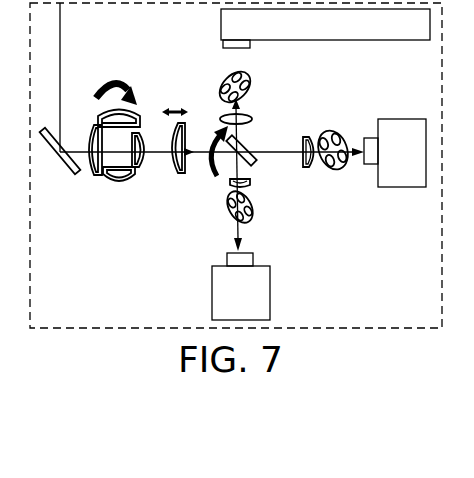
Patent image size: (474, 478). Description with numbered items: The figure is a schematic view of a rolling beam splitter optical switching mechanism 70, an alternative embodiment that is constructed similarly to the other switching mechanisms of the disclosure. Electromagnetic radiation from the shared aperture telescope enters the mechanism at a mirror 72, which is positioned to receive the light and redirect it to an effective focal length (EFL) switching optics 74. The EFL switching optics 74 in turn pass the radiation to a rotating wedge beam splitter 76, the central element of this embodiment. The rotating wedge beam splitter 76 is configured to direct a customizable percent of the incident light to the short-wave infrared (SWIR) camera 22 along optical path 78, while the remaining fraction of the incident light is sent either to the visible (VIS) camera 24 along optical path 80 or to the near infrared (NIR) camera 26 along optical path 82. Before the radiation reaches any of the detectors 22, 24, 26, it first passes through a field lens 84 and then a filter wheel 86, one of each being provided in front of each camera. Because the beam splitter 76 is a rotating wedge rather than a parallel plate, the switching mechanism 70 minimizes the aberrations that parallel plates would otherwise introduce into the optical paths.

The rolling beam splitter optical switching mechanism 70 is at (117, 335).
The mirror 72 is at (62, 162).
The effective focal length (EFL) switching optics 74 is at (118, 180).
The rotating wedge beam splitter 76 is at (252, 140).
The optical path 78 is at (270, 154).
The optical path 80 is at (235, 228).
The optical path 82 is at (230, 114).
The field lens 84 is at (251, 116).
The filter wheel 86 is at (238, 75).
The short-wave infrared (SWIR) camera 22 is at (402, 180).
The visible (VIS) camera 24 is at (267, 292).
The near infrared (NIR) camera 26 is at (333, 40).